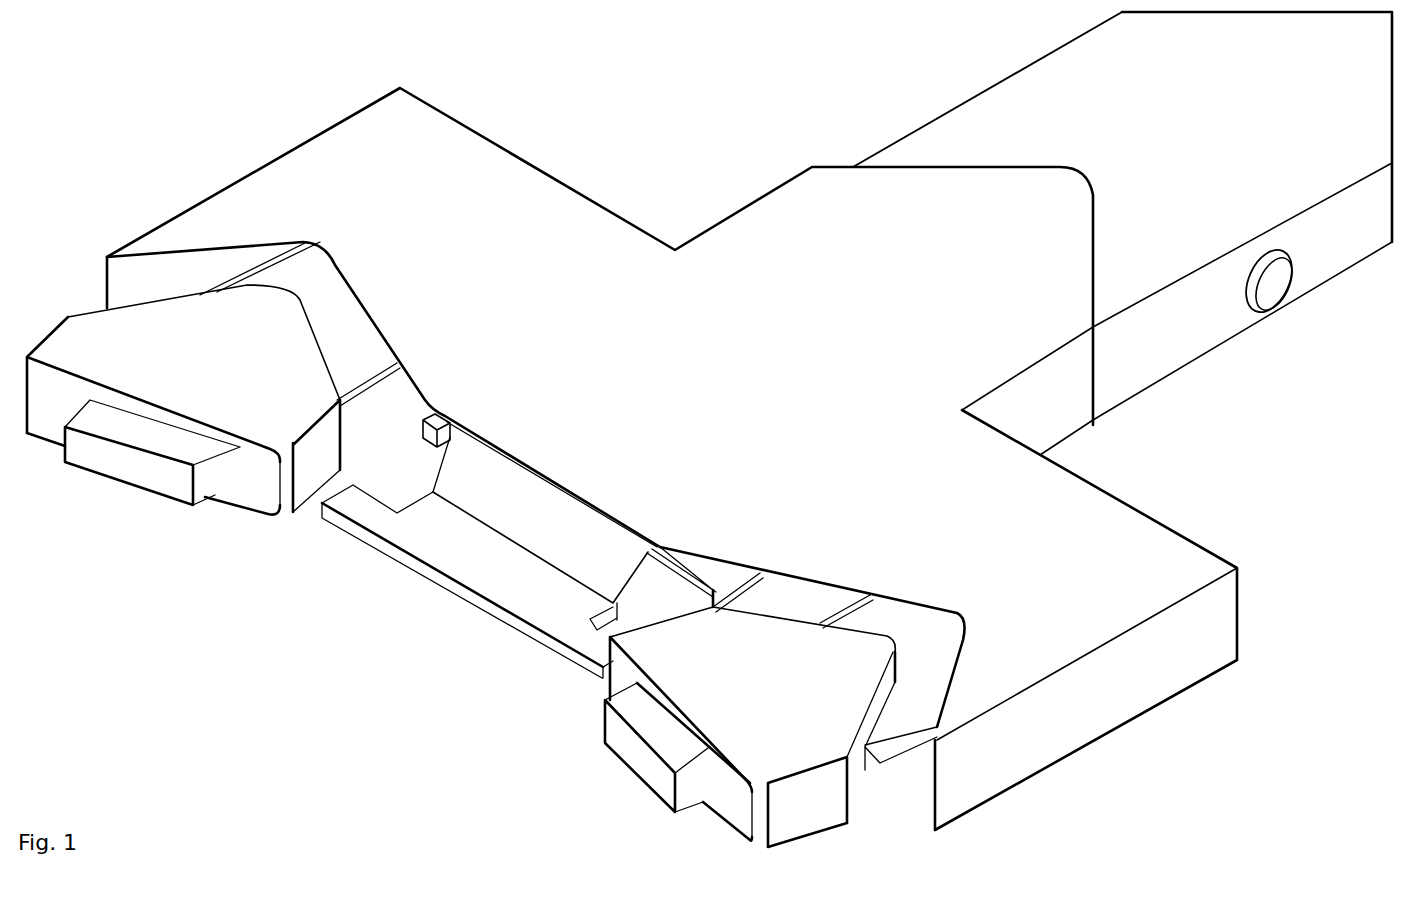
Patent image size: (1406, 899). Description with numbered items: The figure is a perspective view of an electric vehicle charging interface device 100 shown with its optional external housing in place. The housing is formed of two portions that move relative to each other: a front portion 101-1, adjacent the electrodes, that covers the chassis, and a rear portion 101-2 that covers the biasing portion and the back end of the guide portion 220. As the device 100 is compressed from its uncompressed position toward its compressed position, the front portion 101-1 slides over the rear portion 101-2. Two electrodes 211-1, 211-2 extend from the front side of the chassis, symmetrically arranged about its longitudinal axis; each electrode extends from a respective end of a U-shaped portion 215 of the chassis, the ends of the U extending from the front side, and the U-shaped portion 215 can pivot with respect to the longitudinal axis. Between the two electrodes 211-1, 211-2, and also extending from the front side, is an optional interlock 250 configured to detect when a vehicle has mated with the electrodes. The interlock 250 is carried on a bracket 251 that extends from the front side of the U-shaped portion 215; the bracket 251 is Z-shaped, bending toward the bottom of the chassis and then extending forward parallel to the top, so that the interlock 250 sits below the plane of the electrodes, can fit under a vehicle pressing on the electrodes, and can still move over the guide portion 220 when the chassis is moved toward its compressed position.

The electric vehicle charging interface device 100 is at (320, 675).
The front portion of housing 101-1 is at (749, 459).
The rear portion of housing 101-2 is at (1122, 165).
The U-shaped portion 215 is at (536, 506).
The guide portion 220 is at (425, 438).
The interlock 250 is at (469, 581).
The bracket 251 is at (540, 547).
The electrode 211-1 is at (630, 742).
The electrode 211-2 is at (160, 463).